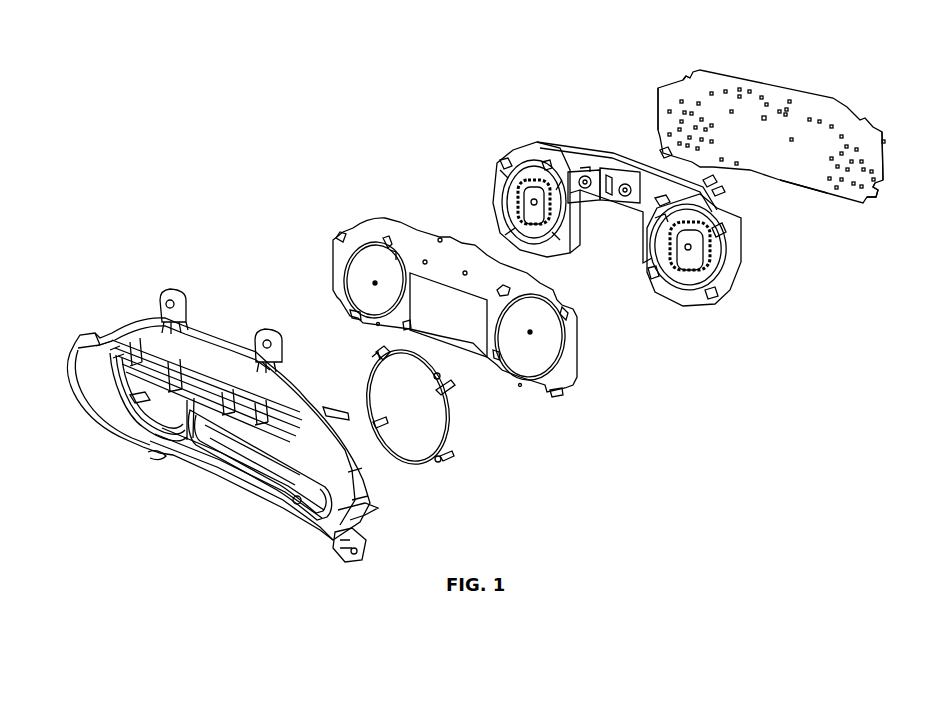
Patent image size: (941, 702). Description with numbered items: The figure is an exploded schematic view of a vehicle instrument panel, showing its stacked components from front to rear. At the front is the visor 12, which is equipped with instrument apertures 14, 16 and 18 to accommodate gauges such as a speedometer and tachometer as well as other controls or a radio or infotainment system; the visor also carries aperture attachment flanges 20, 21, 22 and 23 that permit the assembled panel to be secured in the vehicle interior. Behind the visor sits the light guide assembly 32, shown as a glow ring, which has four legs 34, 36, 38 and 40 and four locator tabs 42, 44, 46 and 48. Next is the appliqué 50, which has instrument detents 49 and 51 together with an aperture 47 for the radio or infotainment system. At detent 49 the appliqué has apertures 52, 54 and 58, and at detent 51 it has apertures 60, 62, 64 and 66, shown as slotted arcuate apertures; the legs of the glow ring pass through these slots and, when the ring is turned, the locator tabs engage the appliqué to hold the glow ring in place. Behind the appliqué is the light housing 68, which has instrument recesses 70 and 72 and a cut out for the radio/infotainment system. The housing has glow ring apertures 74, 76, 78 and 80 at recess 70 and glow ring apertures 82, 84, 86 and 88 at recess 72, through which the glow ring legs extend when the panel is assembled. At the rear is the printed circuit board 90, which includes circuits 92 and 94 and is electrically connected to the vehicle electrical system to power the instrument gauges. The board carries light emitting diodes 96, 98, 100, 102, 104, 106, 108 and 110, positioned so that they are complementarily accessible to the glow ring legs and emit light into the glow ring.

The visor 12 is at (103, 392).
The instrument aperture 14 is at (282, 505).
The instrument aperture 16 is at (140, 432).
The instrument aperture 18 is at (230, 466).
The aperture attachment flange 20 is at (170, 290).
The aperture attachment flange 21 is at (267, 330).
The aperture attachment flange 22 is at (364, 553).
The aperture attachment flange 23 is at (158, 460).
The light guide assembly 32 is at (488, 425).
The leg 34 is at (378, 350).
The leg 36 is at (453, 390).
The leg 38 is at (450, 458).
The leg 40 is at (386, 416).
The locator tab 42 is at (443, 375).
The locator tab 44 is at (436, 468).
The locator tab 46 is at (380, 438).
The aperture 47 is at (442, 320).
The locator tab 48 is at (372, 358).
The instrument detent 49 is at (352, 275).
The appliqué 50 is at (378, 196).
The instrument detent 51 is at (386, 240).
The aperture 52 is at (340, 240).
The aperture 54 is at (347, 310).
The aperture 58 is at (422, 324).
The aperture 60 is at (512, 287).
The aperture 62 is at (575, 315).
The aperture 64 is at (568, 390).
The aperture 66 is at (518, 357).
The light housing 68 is at (776, 243).
The instrument recess 70 is at (495, 172).
The instrument recess 72 is at (695, 290).
The glow ring aperture 74 is at (500, 216).
The glow ring aperture 76 is at (625, 262).
The glow ring aperture 78 is at (546, 165).
The glow ring aperture 80 is at (505, 168).
The glow ring aperture 82 is at (718, 234).
The glow ring aperture 84 is at (662, 200).
The glow ring aperture 86 is at (655, 278).
The glow ring aperture 88 is at (718, 295).
The printed circuit board 90 is at (789, 48).
The circuit 92 is at (684, 78).
The circuit 94 is at (848, 148).
The light emitting diode 96 is at (883, 134).
The light emitting diode 98 is at (868, 202).
The light emitting diode 100 is at (807, 180).
The light emitting diode 102 is at (810, 120).
The light emitting diode 104 is at (660, 90).
The light emitting diode 106 is at (728, 166).
The light emitting diode 108 is at (665, 152).
The light emitting diode 110 is at (712, 95).